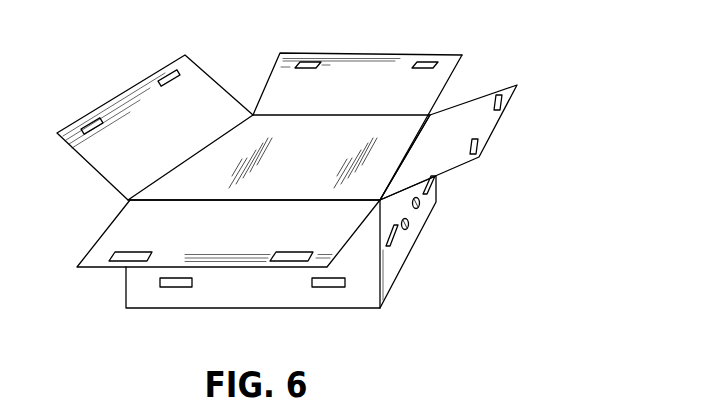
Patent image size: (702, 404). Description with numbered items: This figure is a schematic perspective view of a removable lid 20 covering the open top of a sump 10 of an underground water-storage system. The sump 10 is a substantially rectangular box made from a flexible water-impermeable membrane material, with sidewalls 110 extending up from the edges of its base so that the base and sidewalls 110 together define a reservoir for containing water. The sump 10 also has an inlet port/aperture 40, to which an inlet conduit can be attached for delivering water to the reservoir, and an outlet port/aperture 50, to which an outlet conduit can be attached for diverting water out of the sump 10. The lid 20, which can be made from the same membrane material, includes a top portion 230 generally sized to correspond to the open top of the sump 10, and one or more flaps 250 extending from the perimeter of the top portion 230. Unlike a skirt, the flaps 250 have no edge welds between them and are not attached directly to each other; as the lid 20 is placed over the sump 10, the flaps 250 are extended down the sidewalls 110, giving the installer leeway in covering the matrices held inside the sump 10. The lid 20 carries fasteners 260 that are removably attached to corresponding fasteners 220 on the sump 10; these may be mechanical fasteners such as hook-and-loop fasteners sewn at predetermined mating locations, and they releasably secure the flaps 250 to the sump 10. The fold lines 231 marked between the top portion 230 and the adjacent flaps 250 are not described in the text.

The sump 10 is at (294, 215).
The removable lid 20 is at (398, 130).
The inlet port/aperture 40 is at (418, 208).
The outlet port/aperture 50 is at (408, 230).
The sidewall 110 is at (223, 295).
The fastener 220 is at (177, 288).
The top portion 230 is at (287, 137).
The fold line 231 is at (215, 131).
The flap 250 is at (138, 100).
The fastener 260 is at (306, 61).